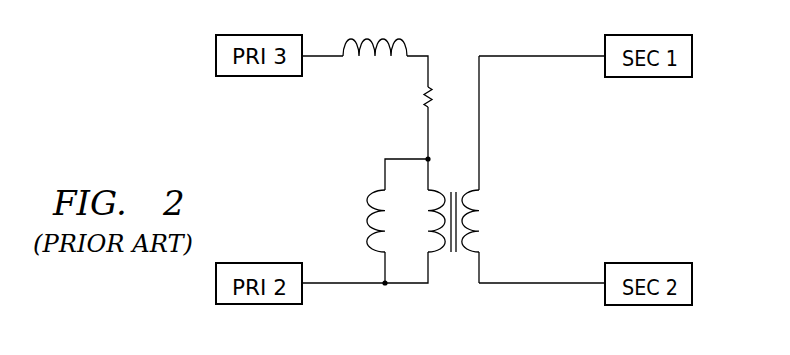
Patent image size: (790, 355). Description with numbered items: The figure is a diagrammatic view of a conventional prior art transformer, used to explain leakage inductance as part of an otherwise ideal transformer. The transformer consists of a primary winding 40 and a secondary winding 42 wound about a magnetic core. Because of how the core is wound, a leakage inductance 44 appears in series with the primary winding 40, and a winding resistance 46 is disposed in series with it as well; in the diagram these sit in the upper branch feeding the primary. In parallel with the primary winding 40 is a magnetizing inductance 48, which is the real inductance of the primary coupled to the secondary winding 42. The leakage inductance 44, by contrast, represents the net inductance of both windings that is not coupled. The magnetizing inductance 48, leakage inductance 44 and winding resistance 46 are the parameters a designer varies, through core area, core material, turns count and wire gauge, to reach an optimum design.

The primary winding 40 is at (430, 255).
The secondary winding 42 is at (477, 189).
The leakage inductance 44 is at (408, 50).
The winding resistance 46 is at (423, 95).
The magnetizing inductance 48 is at (382, 189).